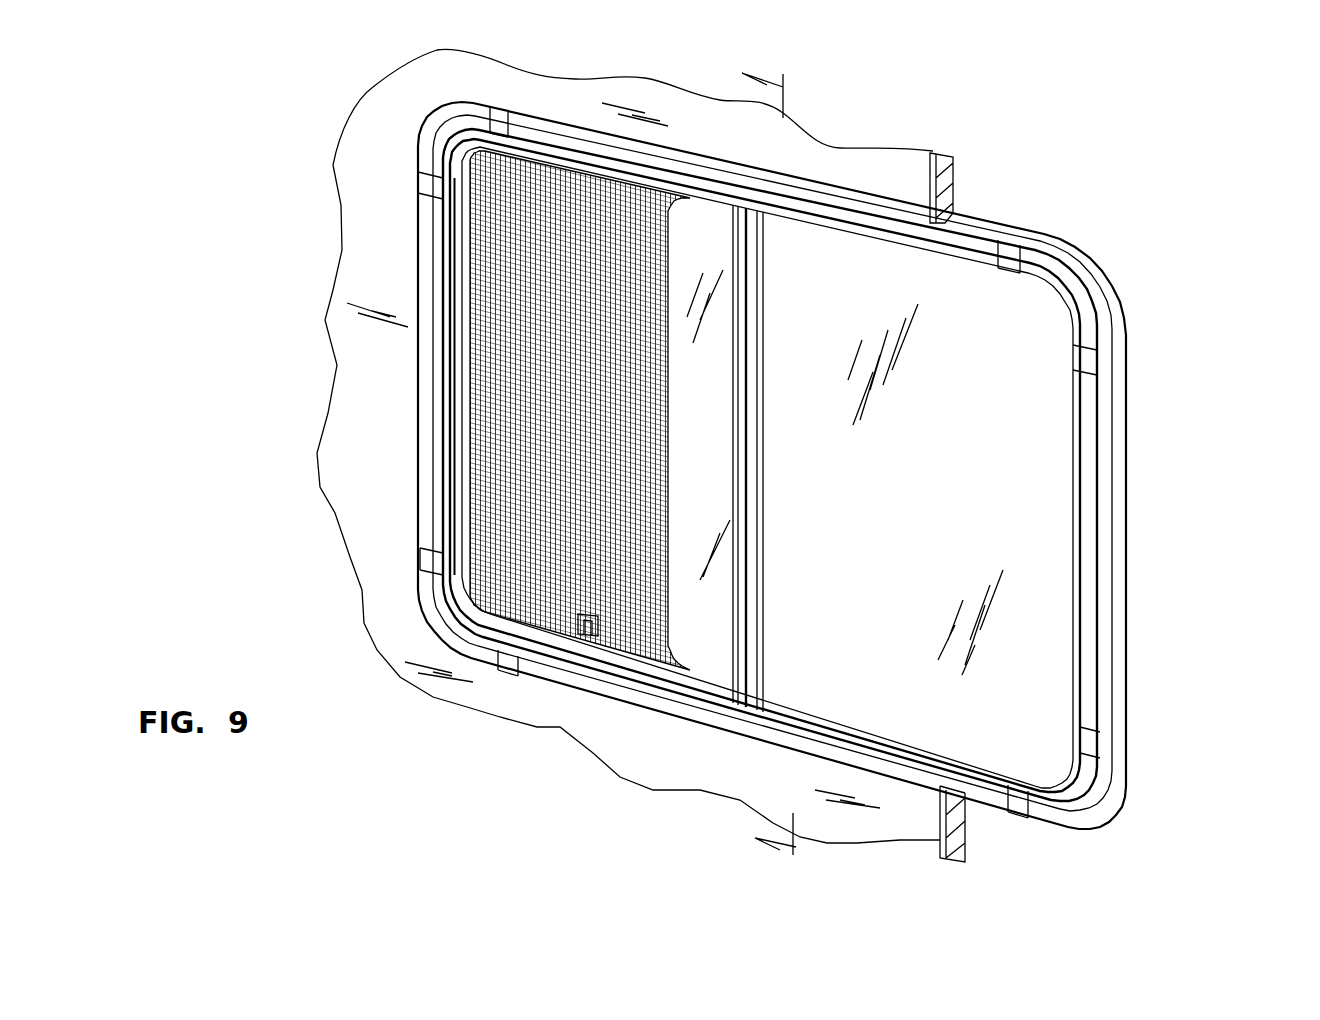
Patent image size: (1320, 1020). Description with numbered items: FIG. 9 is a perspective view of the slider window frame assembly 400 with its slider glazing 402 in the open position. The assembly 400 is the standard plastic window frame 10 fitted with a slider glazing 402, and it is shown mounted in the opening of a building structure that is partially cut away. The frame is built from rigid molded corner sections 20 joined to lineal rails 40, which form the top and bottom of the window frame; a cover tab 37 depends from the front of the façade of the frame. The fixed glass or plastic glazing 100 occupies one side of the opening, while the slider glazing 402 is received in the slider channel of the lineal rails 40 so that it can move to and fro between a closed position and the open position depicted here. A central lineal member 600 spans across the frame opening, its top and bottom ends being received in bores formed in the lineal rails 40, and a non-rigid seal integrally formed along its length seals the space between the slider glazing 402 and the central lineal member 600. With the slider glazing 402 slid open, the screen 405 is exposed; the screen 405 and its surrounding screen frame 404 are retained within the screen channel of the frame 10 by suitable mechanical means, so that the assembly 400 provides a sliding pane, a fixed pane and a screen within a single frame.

The window frame assembly 400 is at (1022, 150).
The corner section 20 is at (1118, 260).
The lineal rail 40 is at (406, 372).
The cover tab 37 is at (434, 566).
The screen frame 404 is at (452, 152).
The screen 405 is at (572, 630).
The slider glazing 402 is at (722, 466).
The central lineal member 600 is at (752, 537).
The glazing 100 is at (950, 496).
The window frame 10 is at (749, 459).